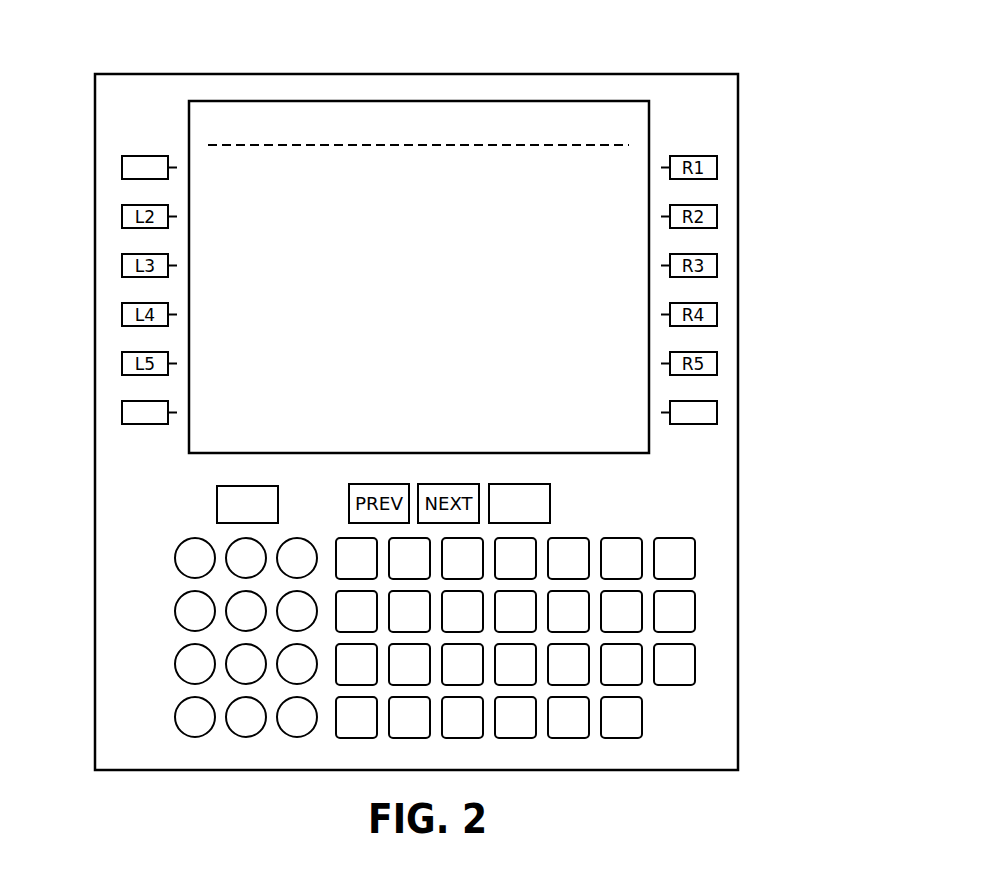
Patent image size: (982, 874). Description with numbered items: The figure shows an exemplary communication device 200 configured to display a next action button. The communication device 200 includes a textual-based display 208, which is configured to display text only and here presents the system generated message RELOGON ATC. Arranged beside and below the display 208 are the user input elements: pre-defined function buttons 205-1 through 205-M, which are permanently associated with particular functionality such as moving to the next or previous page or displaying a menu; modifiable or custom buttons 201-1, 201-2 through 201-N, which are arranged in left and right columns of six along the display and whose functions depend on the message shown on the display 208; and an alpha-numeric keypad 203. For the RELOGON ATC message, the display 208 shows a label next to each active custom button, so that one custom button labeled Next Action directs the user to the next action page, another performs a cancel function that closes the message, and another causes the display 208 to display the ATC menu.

The communication device 200 is at (793, 138).
The textual-based display 208 is at (607, 124).
The custom button 201-N is at (122, 170).
The custom button 201-1 is at (122, 410).
The custom button 201-2 is at (717, 414).
The pre-defined function button 205-1 is at (217, 517).
The pre-defined function button 205-M is at (550, 513).
The alpha-numeric keypad 203 is at (757, 530).